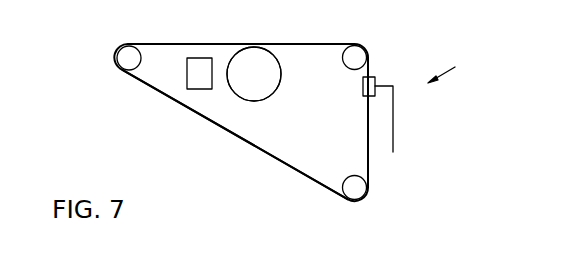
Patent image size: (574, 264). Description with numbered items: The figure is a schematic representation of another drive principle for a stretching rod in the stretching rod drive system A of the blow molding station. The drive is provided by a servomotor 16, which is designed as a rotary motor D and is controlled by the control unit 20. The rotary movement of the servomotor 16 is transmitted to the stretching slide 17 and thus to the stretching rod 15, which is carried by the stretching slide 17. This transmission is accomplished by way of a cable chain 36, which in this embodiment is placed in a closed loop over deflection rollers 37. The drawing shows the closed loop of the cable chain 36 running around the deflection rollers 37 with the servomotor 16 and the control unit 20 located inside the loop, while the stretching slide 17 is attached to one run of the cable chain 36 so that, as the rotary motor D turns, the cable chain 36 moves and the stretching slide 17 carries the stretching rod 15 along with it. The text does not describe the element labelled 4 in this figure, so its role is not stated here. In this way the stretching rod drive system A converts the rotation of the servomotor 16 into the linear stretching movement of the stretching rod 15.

The belt 4 is at (288, 180).
The cable chain 36 is at (178, 108).
The deflection rollers 37 is at (128, 45).
The control unit 20 is at (203, 90).
The servomotor 16 is at (280, 74).
The rotary motor D is at (256, 101).
The stretching slide 17 is at (376, 80).
The stretching rod 15 is at (393, 136).
The stretching rod drive system A is at (446, 65).